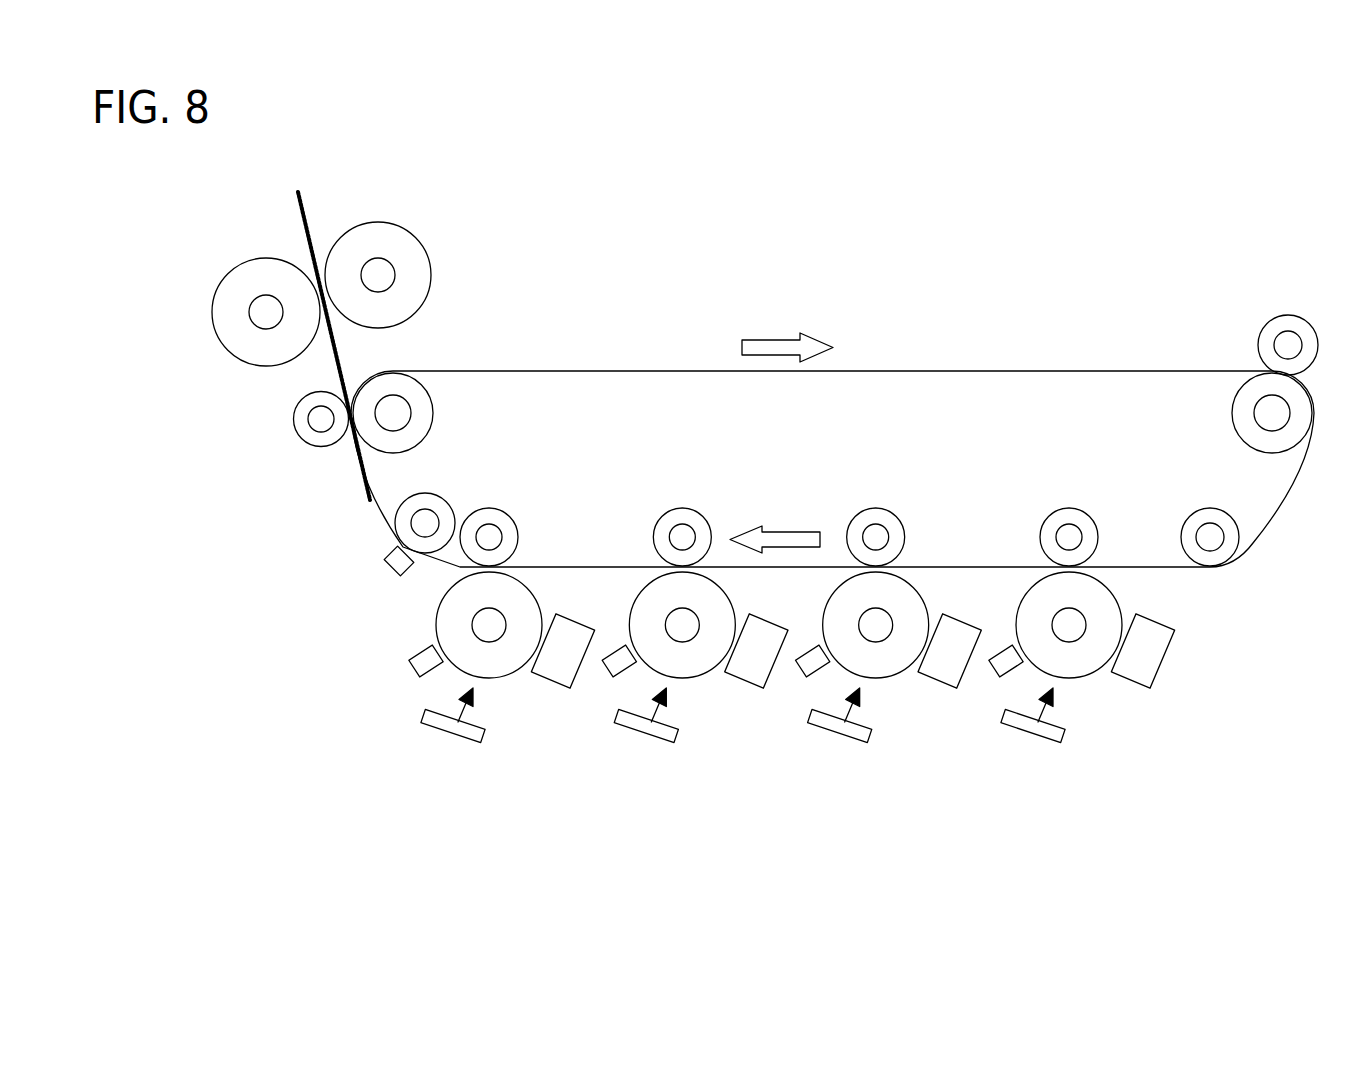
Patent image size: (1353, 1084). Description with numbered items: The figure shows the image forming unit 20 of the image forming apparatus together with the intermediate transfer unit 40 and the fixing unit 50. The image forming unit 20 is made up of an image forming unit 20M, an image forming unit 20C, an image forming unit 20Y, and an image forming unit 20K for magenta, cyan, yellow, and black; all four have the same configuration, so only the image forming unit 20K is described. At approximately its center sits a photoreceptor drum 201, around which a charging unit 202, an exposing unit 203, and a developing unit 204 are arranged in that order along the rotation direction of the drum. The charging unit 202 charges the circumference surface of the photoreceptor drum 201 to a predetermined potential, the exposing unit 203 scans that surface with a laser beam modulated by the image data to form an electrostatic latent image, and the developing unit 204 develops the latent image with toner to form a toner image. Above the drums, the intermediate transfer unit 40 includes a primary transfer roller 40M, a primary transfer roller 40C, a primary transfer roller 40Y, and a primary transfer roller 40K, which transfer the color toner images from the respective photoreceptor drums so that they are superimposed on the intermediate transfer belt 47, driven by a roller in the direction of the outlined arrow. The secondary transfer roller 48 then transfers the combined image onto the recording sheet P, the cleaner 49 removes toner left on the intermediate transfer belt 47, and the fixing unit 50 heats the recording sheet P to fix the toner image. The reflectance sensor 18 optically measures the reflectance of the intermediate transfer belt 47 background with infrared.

The recording sheet P is at (305, 208).
The fixing unit 50 is at (432, 253).
The intermediate transfer belt 47 is at (510, 372).
The secondary transfer roller 48 is at (303, 437).
The cleaner 49 is at (1260, 333).
The intermediate transfer unit 40 is at (834, 406).
The primary transfer roller 40K is at (519, 527).
The primary transfer roller 40Y is at (731, 510).
The primary transfer roller 40C is at (924, 510).
The primary transfer roller 40M is at (1118, 510).
The reflectance sensor 18 is at (387, 565).
The image forming unit 20 is at (773, 737).
The image forming unit 20K is at (507, 787).
The image forming unit 20Y is at (701, 779).
The image forming unit 20C is at (895, 779).
The image forming unit 20M is at (1089, 779).
The photoreceptor drum 201 is at (493, 678).
The charging unit 202 is at (413, 675).
The exposing unit 203 is at (447, 730).
The developing unit 204 is at (555, 688).